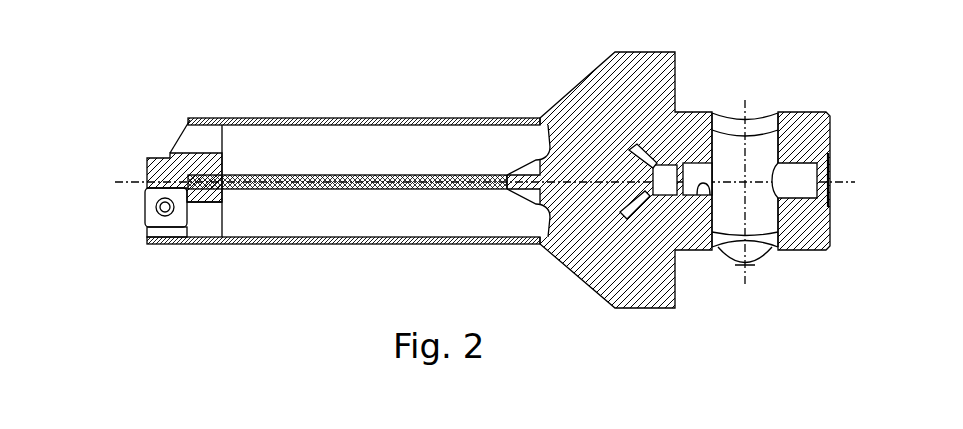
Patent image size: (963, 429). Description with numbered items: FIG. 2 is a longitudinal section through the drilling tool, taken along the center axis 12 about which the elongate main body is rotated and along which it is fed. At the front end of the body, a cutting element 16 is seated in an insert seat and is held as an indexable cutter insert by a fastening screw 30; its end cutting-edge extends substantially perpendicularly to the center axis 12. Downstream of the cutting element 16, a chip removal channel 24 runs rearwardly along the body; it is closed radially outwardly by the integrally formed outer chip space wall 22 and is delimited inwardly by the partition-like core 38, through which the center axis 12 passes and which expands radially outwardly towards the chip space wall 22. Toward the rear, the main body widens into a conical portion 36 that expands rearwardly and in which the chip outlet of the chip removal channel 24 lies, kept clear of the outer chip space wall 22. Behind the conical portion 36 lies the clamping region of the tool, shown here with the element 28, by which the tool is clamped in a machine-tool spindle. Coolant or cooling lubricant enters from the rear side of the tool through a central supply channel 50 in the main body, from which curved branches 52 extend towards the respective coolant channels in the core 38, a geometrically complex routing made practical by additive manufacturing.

The center axis 12 is at (250, 172).
The cutting element 16 is at (143, 208).
The outer chip space wall 22 is at (338, 120).
The chip removal channel 24 is at (250, 124).
The nut 28 is at (797, 112).
The fastening screw 30 is at (170, 215).
The conical portion 36 is at (578, 88).
The partition-like core 38 is at (290, 192).
The central supply channel 50 is at (707, 187).
The curved branch 52 is at (648, 207).